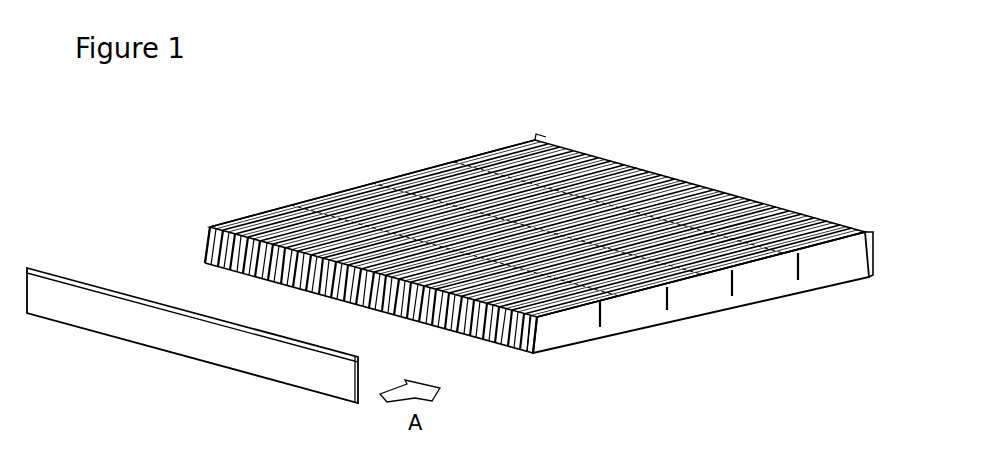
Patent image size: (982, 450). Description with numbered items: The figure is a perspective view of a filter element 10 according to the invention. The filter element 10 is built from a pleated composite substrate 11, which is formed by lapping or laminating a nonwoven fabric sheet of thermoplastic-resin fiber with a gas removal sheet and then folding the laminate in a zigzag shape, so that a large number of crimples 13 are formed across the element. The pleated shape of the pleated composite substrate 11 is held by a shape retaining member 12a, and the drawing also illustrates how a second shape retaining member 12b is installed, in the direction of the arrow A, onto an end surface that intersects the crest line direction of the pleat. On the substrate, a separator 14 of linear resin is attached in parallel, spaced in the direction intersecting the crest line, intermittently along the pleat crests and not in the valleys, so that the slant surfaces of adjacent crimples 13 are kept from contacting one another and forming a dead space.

The filter element 10 is at (658, 127).
The pleated composite substrate 11 is at (700, 295).
The shape retaining member 12a is at (880, 232).
The shape retaining member 12b is at (170, 333).
The crimples 13 is at (403, 183).
The separator 14 is at (600, 327).